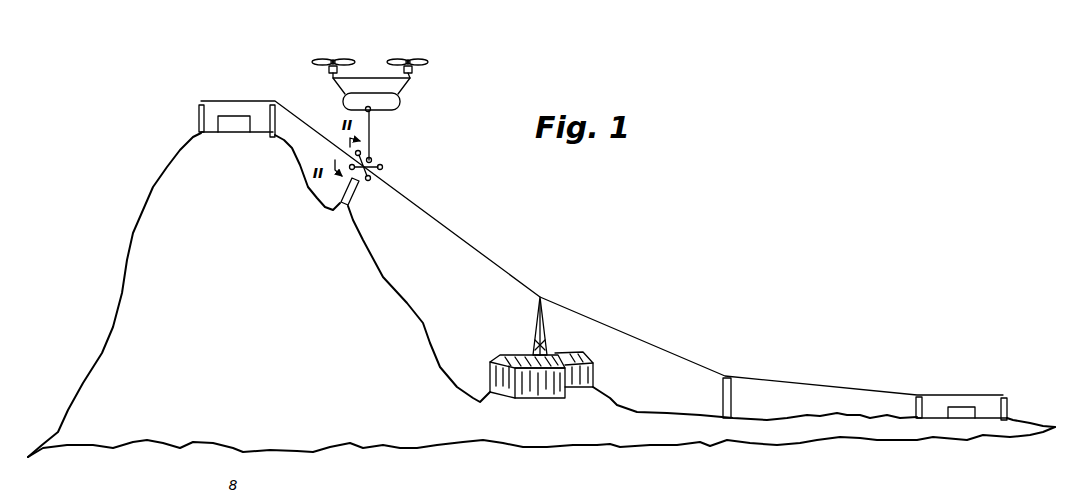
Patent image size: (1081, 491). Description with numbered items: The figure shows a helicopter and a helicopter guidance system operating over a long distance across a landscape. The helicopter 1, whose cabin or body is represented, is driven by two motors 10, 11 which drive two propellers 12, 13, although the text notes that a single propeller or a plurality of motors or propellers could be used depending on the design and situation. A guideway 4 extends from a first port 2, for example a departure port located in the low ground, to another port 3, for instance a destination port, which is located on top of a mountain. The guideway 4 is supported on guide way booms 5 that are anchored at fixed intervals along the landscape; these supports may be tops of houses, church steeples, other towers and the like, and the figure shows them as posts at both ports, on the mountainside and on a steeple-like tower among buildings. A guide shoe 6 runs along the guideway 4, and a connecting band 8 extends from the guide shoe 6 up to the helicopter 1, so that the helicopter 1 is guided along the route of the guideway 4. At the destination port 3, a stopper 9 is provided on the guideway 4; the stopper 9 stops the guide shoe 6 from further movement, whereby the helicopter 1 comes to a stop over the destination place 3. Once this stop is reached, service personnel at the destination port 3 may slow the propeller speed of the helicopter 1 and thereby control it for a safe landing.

The helicopter 1 is at (387, 105).
The first port 2 is at (960, 419).
The destination port 3 is at (228, 133).
The guideway 4 is at (255, 100).
The guide way booms 5 is at (201, 122).
The guide shoe 6 is at (382, 167).
The connecting band 8 is at (370, 122).
The stopper 9 is at (217, 99).
The motor 10 is at (328, 70).
The motor 11 is at (412, 72).
The propeller 12 is at (323, 59).
The propeller 13 is at (424, 59).